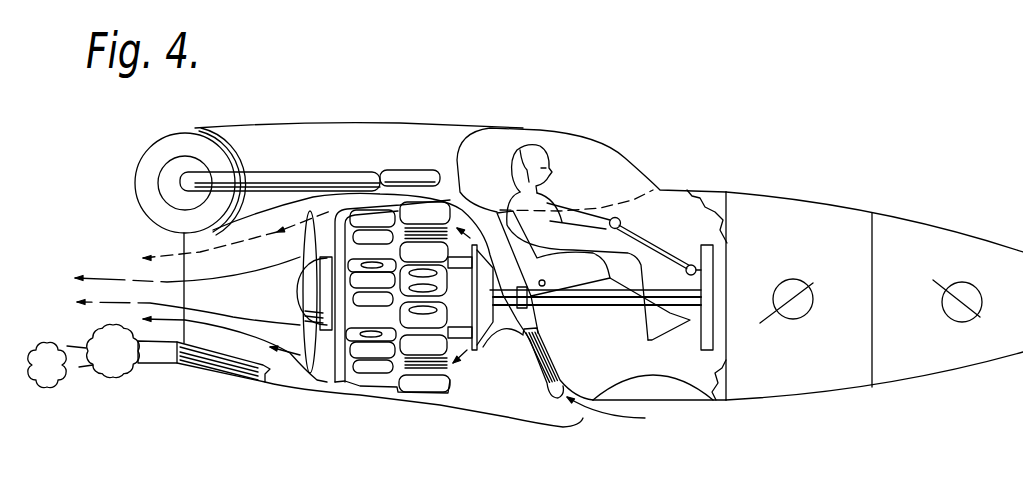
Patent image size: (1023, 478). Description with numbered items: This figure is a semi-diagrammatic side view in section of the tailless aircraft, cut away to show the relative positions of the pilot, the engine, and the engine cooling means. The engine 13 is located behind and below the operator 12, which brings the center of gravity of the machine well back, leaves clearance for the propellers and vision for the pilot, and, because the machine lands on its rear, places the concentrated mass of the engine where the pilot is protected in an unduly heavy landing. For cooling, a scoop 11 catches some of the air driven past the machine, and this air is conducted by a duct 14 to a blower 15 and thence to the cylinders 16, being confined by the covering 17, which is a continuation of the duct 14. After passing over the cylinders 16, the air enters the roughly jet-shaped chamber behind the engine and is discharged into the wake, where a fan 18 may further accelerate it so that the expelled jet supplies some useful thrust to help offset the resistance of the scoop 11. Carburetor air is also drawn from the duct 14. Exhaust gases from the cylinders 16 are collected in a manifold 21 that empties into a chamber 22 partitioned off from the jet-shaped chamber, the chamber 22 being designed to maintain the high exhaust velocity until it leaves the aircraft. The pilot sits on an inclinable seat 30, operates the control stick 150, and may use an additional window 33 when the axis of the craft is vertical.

The scoop 11 is at (597, 418).
The operator 12 is at (563, 205).
The engine 13 is at (465, 345).
The duct 14 is at (551, 357).
The blower 15 is at (493, 313).
The cylinders 16 is at (413, 377).
The covering 17 is at (455, 400).
The fan 18 is at (302, 362).
The manifold 21 is at (322, 385).
The chamber 22 is at (250, 377).
The seat 30 is at (537, 258).
The window 33 is at (672, 400).
The control stick 150 is at (652, 238).